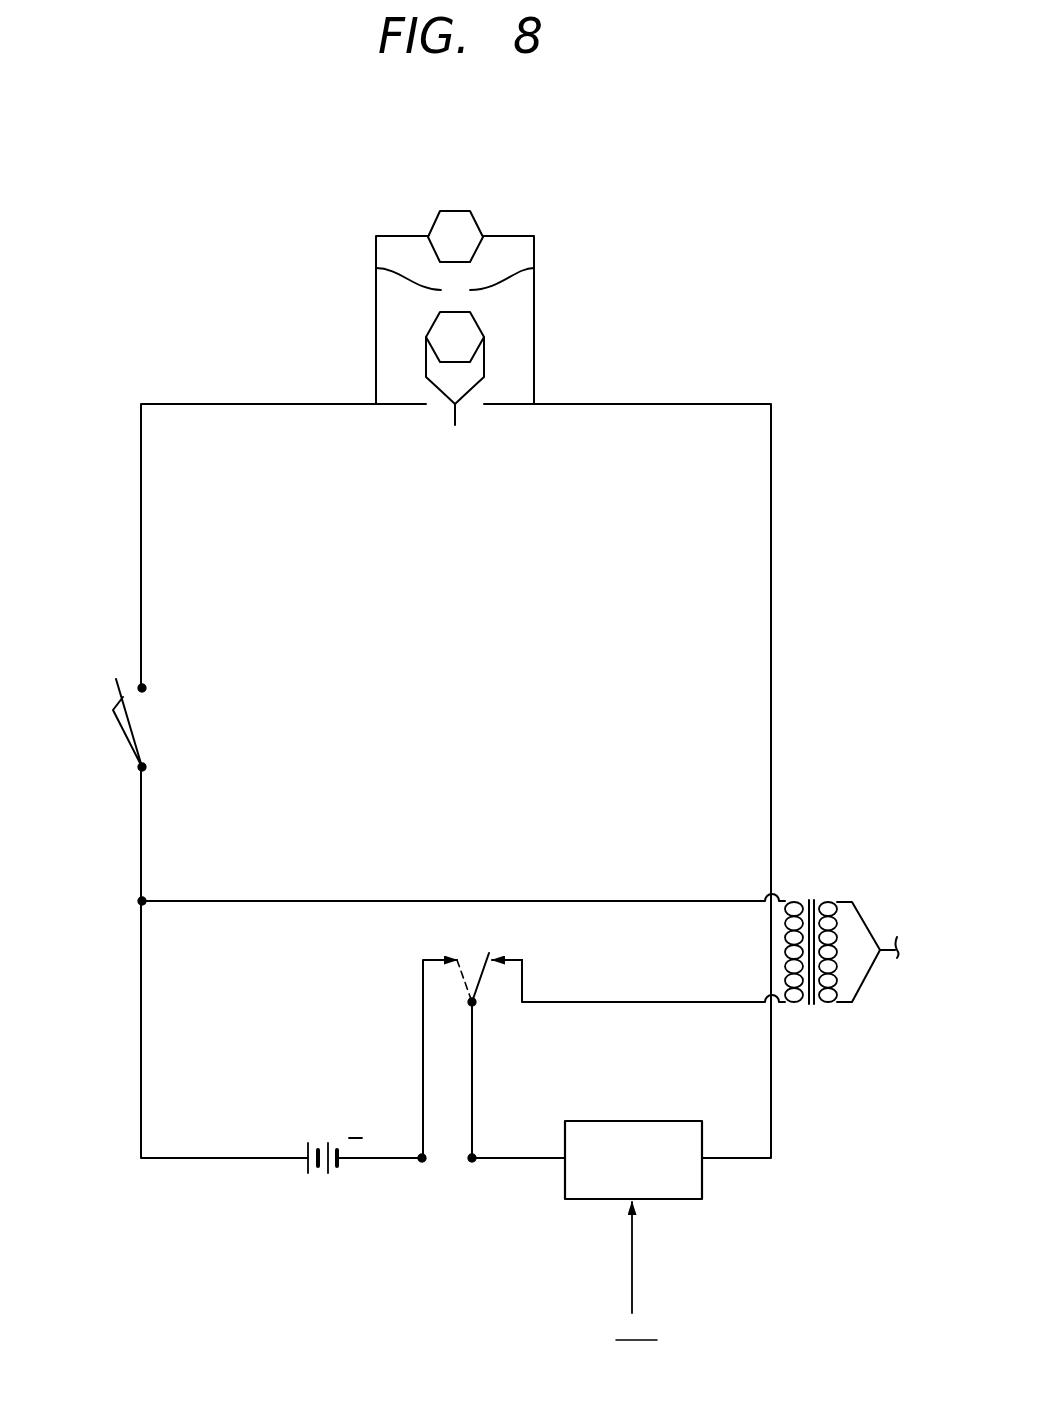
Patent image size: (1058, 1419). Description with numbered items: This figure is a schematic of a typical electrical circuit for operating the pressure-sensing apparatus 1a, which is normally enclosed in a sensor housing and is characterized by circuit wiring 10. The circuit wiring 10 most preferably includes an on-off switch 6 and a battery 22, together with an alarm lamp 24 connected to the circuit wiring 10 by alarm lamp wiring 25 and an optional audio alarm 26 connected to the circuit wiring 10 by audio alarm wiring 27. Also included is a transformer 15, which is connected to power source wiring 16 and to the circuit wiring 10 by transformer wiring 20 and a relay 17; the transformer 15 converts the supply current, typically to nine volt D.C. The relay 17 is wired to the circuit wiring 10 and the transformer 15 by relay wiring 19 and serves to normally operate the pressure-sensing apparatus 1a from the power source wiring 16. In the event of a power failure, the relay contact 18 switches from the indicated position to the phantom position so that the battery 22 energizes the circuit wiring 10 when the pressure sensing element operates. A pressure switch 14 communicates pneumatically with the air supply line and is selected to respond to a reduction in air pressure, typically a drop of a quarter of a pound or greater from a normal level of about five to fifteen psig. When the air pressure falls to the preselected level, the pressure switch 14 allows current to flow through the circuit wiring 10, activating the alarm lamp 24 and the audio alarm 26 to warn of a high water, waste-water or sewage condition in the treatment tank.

The pressure-sensing apparatus 1a is at (479, 1225).
The on-off switch 6 is at (136, 731).
The circuit wiring 10 is at (140, 458).
The pressure switch 14 is at (668, 1203).
The transformer 15 is at (811, 898).
The power source wiring 16 is at (890, 946).
The relay 17 is at (498, 955).
The relay contact 18 is at (487, 950).
The relay wiring 19 is at (423, 1002).
The transformer wiring 20 is at (558, 901).
The battery 22 is at (310, 1141).
The alarm lamp 24 is at (446, 338).
The alarm lamp wiring 25 is at (455, 396).
The audio alarm 26 is at (455, 232).
The audio alarm wiring 27 is at (455, 288).